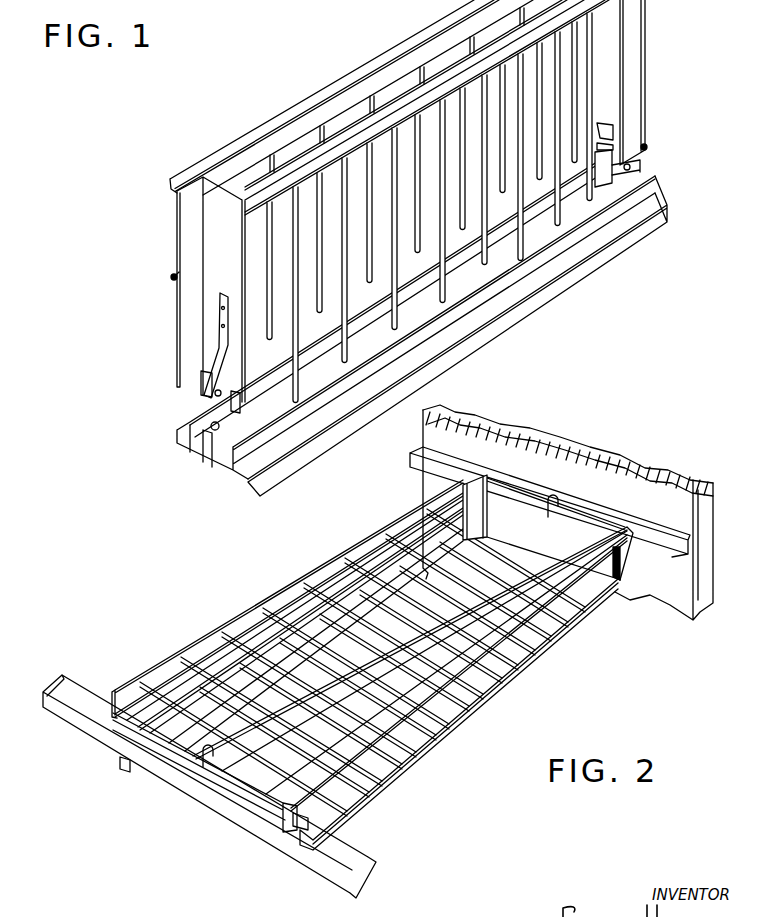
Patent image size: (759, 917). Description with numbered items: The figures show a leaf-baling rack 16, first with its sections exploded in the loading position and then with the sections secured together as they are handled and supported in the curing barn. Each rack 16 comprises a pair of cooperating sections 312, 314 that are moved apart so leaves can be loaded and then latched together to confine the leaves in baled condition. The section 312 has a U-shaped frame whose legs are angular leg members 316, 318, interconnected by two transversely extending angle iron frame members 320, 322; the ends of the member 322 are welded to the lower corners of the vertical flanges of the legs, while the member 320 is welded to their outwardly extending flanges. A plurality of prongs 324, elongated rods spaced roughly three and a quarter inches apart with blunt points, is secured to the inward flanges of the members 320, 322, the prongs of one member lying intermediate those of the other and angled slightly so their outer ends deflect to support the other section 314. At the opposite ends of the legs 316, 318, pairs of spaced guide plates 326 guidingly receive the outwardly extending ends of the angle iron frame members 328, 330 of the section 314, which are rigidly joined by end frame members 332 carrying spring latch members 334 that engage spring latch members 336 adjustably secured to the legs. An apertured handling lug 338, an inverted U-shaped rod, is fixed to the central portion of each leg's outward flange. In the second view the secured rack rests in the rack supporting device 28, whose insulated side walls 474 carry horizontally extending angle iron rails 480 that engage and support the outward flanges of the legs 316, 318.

In FIG. 1, the rack 16 is at (343, 70).
In FIG. 2, the rack 16 is at (245, 577).
In FIG. 2, the rack supporting device 28 is at (632, 455).
In FIG. 2, the rack section 312 is at (523, 677).
In FIG. 1, the rack section 314 is at (547, 287).
In FIG. 2, the rack section 314 is at (346, 550).
In FIG. 1, the angular leg member 316 is at (210, 232).
In FIG. 2, the angular leg member 316 is at (247, 788).
In FIG. 1, the angular leg member 318 is at (633, 53).
In FIG. 2, the angular leg member 318 is at (573, 537).
In FIG. 1, the angle iron frame member 320 is at (300, 107).
In FIG. 2, the angle iron frame member 320 is at (560, 640).
In FIG. 1, the angle iron frame member 322 is at (457, 63).
In FIG. 2, the angle iron frame member 322 is at (452, 730).
In FIG. 1, the prongs 324 is at (623, 92).
In FIG. 2, the prongs 324 is at (275, 645).
In FIG. 1, the guide plates 326 is at (233, 405).
In FIG. 1, the angle iron frame member 328 is at (372, 386).
In FIG. 2, the angle iron frame member 328 is at (317, 577).
In FIG. 1, the angle iron frame member 330 is at (470, 320).
In FIG. 2, the angle iron frame member 330 is at (158, 672).
In FIG. 1, the end frame member 332 is at (205, 442).
In FIG. 2, the end frame member 332 is at (478, 513).
In FIG. 1, the spring latch member 334 is at (215, 432).
In FIG. 1, the spring latch member 336 is at (217, 355).
In FIG. 1, the handling lug 338 is at (172, 279).
In FIG. 2, the handling lug 338 is at (190, 760).
In FIG. 2, the side wall 474 is at (497, 423).
In FIG. 2, the angle iron rail 480 is at (647, 540).